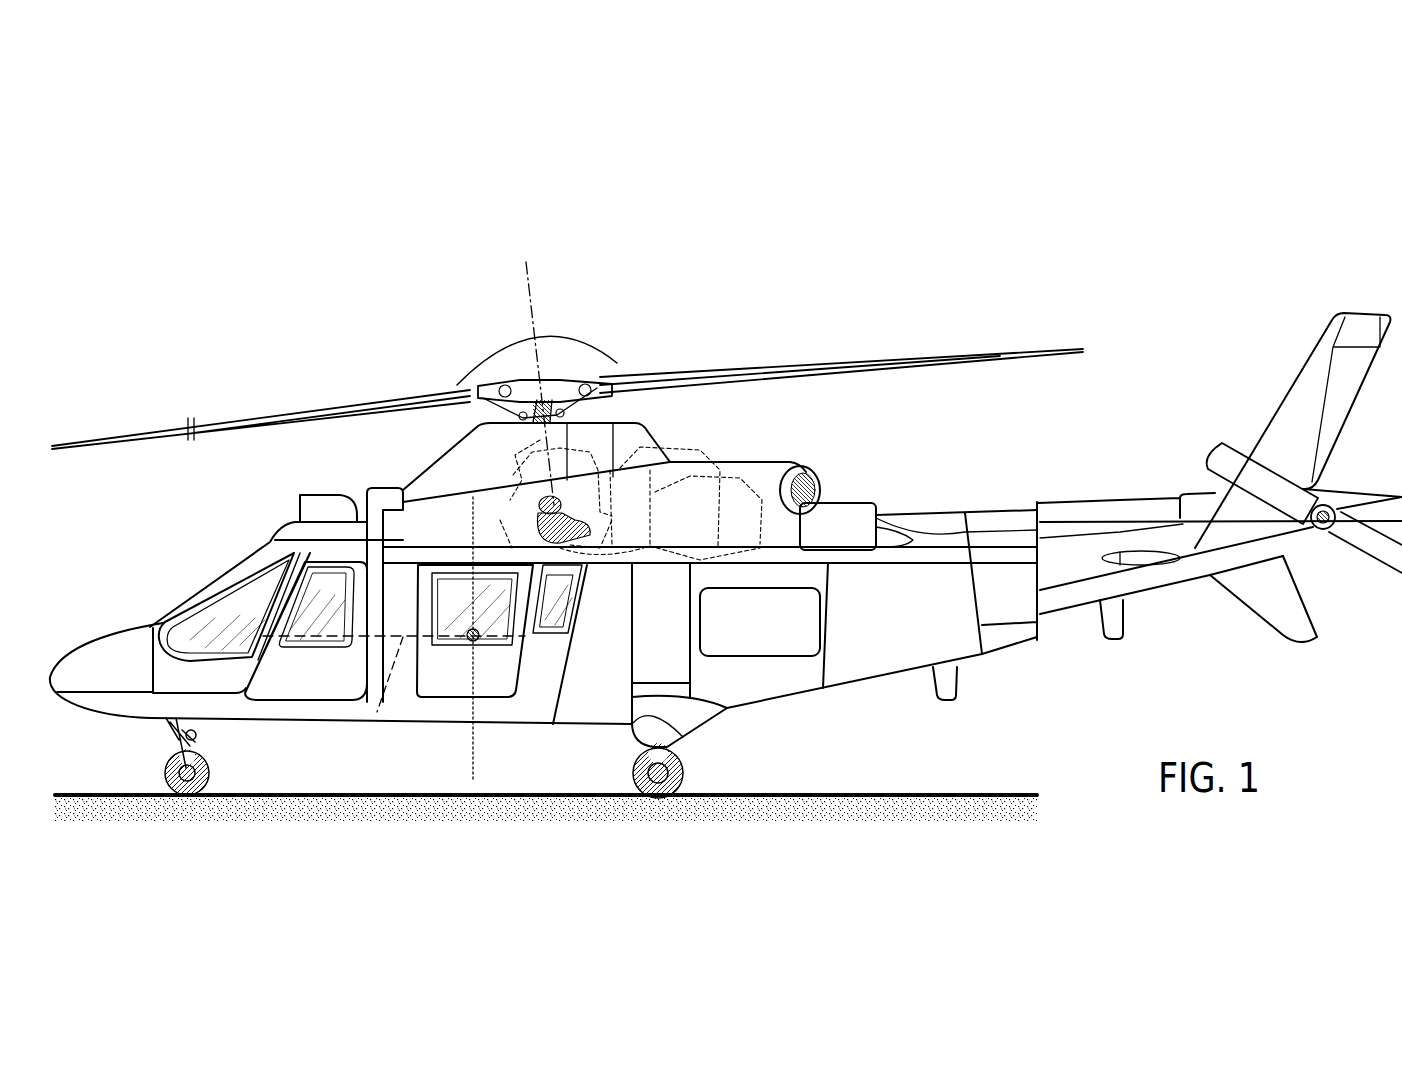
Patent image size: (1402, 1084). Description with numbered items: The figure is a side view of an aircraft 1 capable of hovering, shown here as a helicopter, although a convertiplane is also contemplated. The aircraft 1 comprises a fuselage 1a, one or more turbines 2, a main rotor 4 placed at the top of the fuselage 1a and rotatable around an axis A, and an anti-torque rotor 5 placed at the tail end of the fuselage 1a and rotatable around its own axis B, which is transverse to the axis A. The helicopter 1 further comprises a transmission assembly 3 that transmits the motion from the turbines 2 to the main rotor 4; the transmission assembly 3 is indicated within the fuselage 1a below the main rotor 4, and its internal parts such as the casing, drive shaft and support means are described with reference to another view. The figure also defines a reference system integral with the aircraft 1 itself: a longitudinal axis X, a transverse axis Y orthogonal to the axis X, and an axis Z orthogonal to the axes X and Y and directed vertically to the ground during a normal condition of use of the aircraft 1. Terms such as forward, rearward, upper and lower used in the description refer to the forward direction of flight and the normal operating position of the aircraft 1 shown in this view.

The aircraft 1 is at (762, 284).
The fuselage 1a is at (602, 612).
The turbine 2 is at (720, 500).
The transmission assembly 3 is at (530, 514).
The main rotor 4 is at (441, 385).
The anti-torque rotor 5 is at (1278, 468).
The axis of the main rotor A is at (538, 292).
The axis of the anti-torque rotor B is at (1327, 527).
The longitudinal axis X is at (387, 698).
The transverse axis Y is at (485, 648).
The vertical axis Z is at (477, 713).